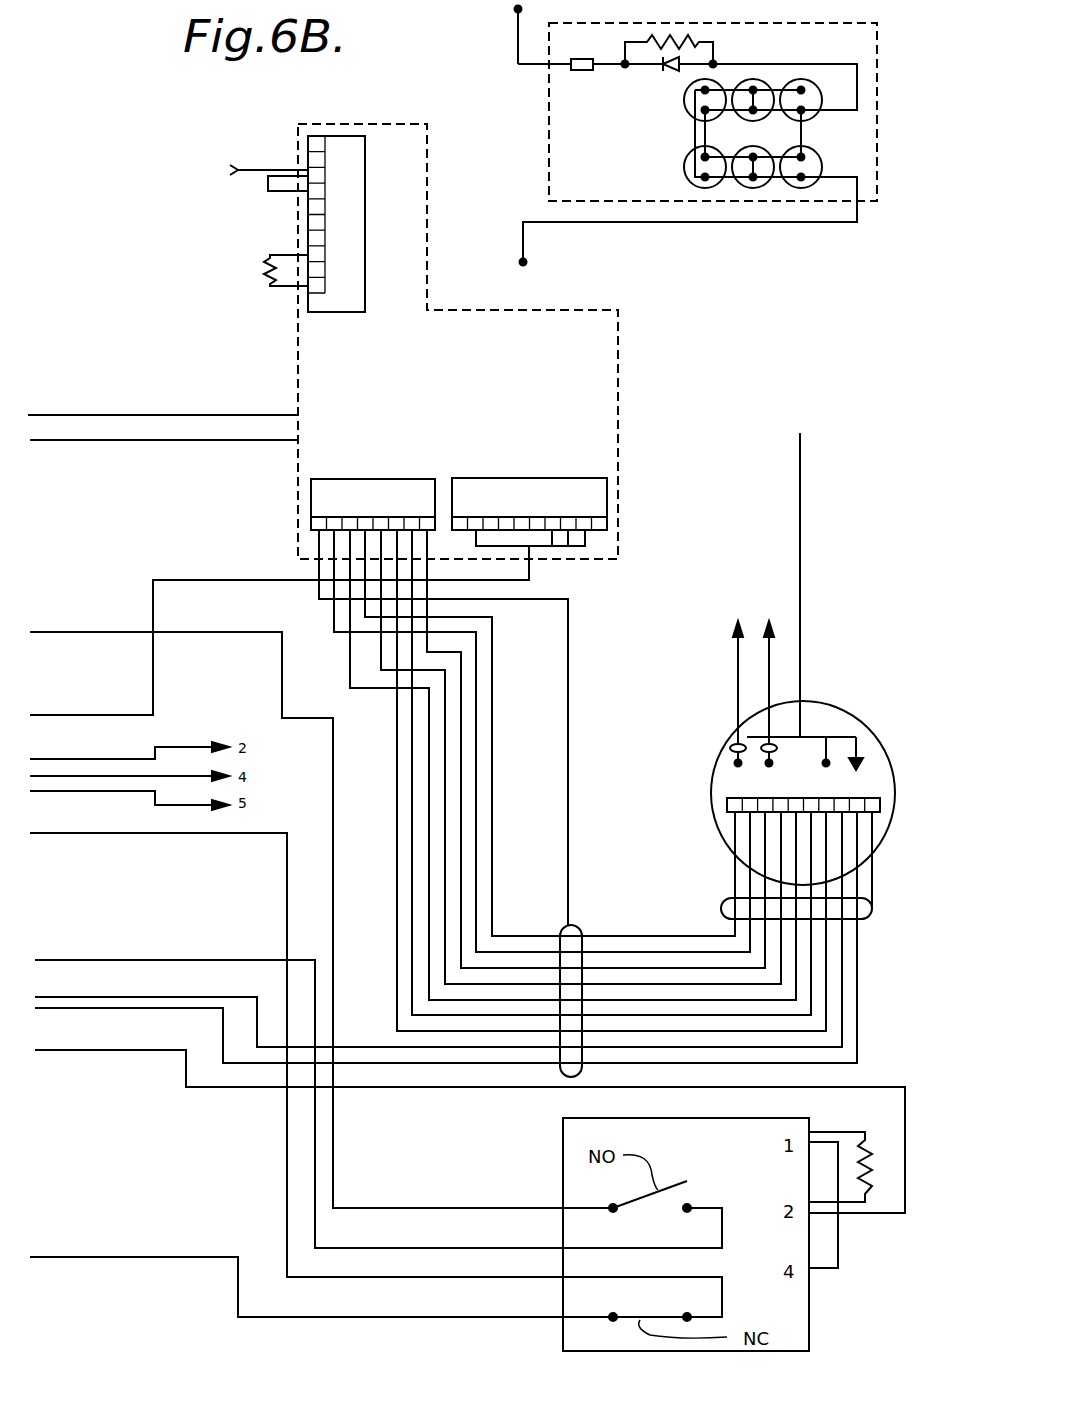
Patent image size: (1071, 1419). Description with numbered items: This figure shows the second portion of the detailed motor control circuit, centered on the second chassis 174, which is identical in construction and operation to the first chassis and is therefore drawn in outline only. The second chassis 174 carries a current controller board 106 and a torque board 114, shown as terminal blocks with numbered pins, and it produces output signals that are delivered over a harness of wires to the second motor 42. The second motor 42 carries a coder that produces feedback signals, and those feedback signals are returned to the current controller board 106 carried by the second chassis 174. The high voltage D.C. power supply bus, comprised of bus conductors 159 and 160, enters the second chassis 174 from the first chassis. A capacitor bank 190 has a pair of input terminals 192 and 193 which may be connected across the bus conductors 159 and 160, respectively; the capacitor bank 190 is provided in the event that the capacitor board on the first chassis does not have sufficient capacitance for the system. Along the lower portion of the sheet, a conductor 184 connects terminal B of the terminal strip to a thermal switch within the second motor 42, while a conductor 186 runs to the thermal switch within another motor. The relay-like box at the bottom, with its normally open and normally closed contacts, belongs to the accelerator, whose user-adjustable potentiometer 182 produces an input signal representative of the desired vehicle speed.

The second motor 42 is at (718, 774).
The current controller board 106 is at (358, 479).
The torque board 114 is at (347, 312).
The bus conductor 159 is at (223, 415).
The bus conductor 160 is at (247, 440).
The second chassis 174 is at (618, 381).
The potentiometer 182 is at (877, 1175).
The conductor 184 is at (378, 1087).
The conductor 186 is at (195, 997).
The capacitor bank 190 is at (549, 147).
The input terminal 192 is at (518, 9).
The input terminal 193 is at (523, 262).